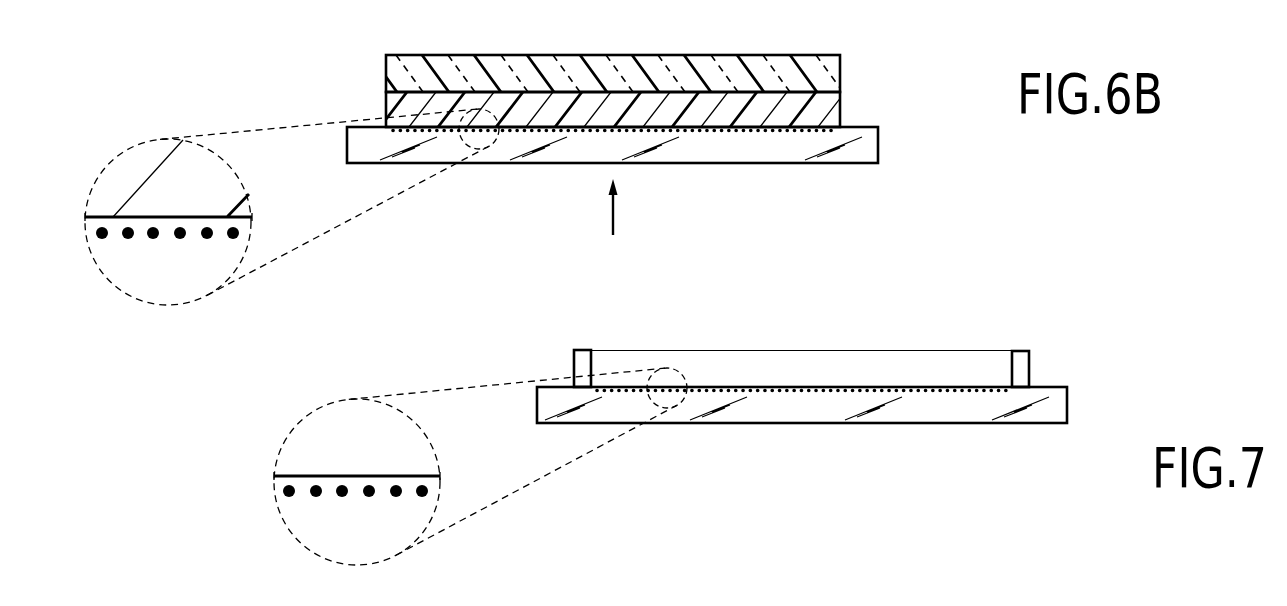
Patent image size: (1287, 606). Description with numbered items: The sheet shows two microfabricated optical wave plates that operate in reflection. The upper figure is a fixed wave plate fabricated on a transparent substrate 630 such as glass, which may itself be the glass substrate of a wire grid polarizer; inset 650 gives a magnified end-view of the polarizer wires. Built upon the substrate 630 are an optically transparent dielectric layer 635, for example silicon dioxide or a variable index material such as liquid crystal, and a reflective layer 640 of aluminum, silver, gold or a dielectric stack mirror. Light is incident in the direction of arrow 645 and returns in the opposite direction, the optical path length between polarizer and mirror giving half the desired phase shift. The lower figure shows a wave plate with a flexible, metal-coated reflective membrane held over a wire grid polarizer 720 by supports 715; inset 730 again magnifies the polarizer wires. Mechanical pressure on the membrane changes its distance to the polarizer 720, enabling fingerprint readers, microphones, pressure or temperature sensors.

In FIG. 6B, the transparent substrate 630 is at (878, 143).
In FIG. 6B, the dielectric layer 635 is at (840, 108).
In FIG. 6B, the reflective layer 640 is at (840, 74).
In FIG. 6B, the arrow 645 is at (613, 218).
In FIG. 6B, the inset 650 is at (103, 274).
In FIG. 7, the supports 715 is at (574, 360).
In FIG. 7, the polarizer 720 is at (1067, 400).
In FIG. 7, the inset 730 is at (280, 448).